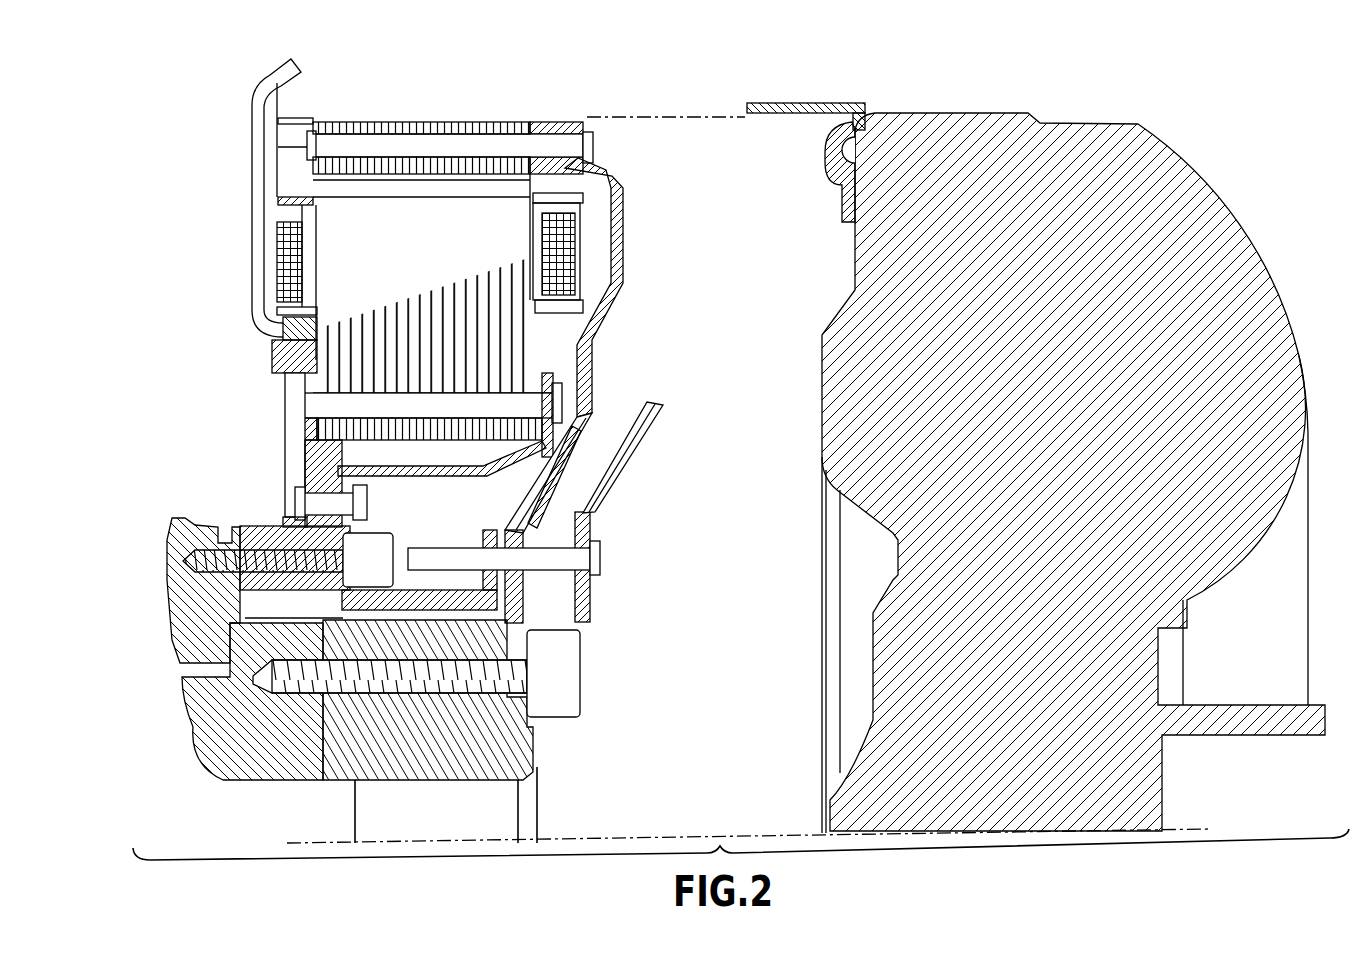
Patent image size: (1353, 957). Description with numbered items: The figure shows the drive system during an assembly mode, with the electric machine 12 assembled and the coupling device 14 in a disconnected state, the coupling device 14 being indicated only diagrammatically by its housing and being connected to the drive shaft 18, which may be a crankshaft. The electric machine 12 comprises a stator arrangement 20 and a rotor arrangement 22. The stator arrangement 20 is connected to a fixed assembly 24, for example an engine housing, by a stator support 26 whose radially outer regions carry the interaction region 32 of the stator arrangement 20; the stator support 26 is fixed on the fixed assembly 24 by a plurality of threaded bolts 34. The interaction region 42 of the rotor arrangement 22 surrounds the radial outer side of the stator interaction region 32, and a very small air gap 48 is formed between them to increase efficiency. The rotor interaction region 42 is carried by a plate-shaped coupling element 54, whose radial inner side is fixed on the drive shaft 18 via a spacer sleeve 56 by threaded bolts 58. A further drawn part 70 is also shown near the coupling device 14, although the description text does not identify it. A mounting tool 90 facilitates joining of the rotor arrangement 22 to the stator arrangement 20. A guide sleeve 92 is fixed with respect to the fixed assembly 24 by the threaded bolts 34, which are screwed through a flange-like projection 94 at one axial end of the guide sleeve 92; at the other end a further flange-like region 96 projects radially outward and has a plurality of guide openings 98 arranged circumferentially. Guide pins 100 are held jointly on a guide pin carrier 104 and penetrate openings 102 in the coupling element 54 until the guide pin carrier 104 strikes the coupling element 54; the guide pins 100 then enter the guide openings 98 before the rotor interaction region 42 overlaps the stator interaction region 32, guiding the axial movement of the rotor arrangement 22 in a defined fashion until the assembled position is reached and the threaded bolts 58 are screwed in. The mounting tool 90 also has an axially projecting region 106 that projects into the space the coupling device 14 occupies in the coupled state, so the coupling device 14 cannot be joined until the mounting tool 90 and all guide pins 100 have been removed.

The electric machine 12 is at (232, 118).
The coupling device 14 is at (1252, 157).
The drive shaft 18 is at (232, 762).
The stator arrangement 20 is at (232, 334).
The rotor arrangement 22 is at (472, 100).
The fixed assembly 24 is at (185, 615).
The stator support 26 is at (302, 467).
The interaction region of the stator arrangement 32 is at (330, 243).
The threaded bolts 34 is at (255, 530).
The interaction region of the rotor arrangement 42 is at (387, 118).
The air gap 48 is at (320, 195).
The coupling element 54 is at (618, 300).
The spacer sleeve 56 is at (520, 750).
The threaded bolts 58 is at (415, 665).
The plate 70 is at (797, 103).
The mounting tool 90 is at (658, 579).
The guide sleeve 92 is at (397, 597).
The flange-like projection 94 is at (343, 590).
The further flange-like region 96 is at (558, 473).
The guide openings 98 is at (570, 453).
The guide pin 100 is at (455, 556).
The opening 102 is at (515, 530).
The guide pin carrier 104 is at (598, 595).
The axially projecting region 106 is at (655, 410).